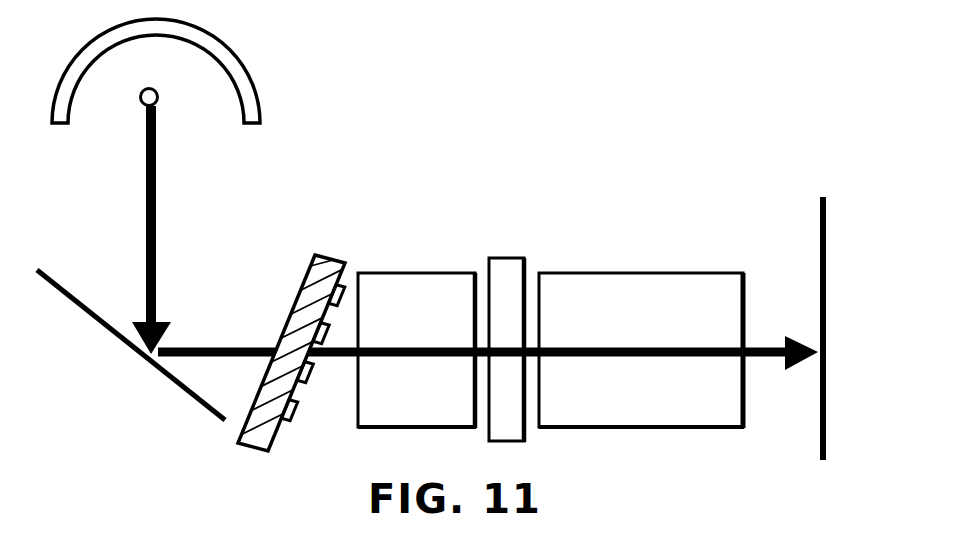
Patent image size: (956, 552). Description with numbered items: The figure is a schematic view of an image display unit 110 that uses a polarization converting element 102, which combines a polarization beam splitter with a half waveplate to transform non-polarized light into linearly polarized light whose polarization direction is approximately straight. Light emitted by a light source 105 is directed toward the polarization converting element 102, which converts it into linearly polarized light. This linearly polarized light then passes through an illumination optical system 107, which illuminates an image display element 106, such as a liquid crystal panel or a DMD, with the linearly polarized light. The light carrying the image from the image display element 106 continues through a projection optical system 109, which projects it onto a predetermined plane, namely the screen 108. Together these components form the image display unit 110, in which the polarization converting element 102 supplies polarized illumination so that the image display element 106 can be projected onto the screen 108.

The image display unit 110 is at (443, 57).
The light source 105 is at (158, 101).
The polarization converting element 102 is at (329, 255).
The illumination optical system 107 is at (421, 273).
The image display element 106 is at (510, 258).
The projection optical system 109 is at (684, 273).
The predetermined plane (screen) 108 is at (820, 201).